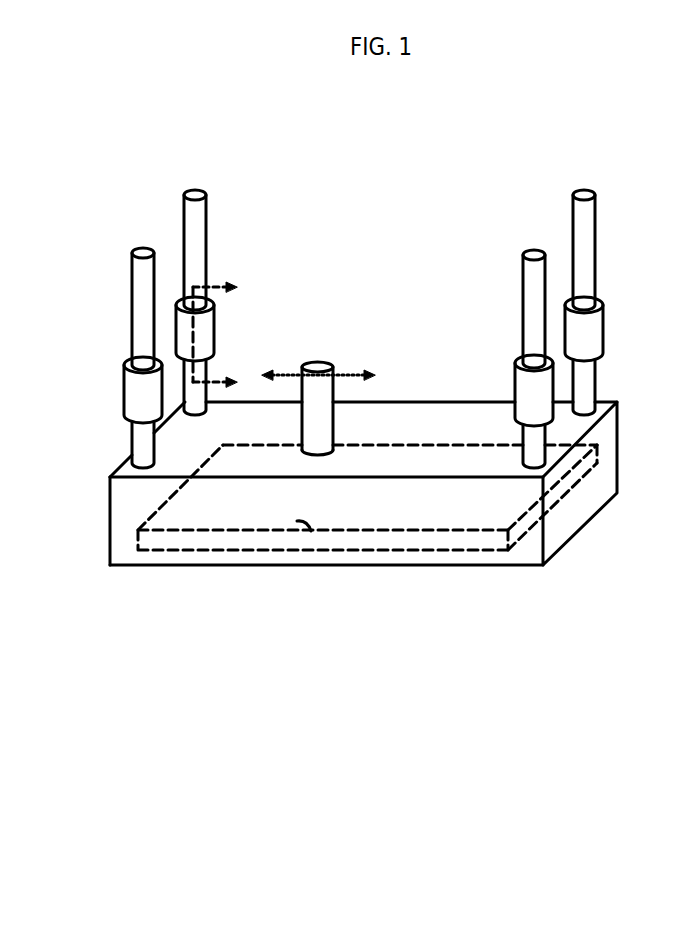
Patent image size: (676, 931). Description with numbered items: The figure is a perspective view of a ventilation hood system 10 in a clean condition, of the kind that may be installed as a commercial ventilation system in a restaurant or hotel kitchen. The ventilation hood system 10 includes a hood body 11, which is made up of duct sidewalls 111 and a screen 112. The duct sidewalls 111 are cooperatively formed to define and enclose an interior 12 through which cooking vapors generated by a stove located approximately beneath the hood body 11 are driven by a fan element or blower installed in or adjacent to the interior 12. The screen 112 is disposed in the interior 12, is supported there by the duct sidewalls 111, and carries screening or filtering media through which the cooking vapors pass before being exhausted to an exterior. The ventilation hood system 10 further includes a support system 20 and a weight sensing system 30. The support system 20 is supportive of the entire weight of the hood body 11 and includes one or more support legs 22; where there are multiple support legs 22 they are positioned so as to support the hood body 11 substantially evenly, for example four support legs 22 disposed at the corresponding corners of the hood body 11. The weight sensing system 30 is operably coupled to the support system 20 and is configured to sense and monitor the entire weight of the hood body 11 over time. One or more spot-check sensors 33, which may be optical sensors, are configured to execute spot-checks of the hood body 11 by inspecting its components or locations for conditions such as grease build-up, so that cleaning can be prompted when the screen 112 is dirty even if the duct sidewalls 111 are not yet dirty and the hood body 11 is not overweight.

The ventilation hood system 10 is at (168, 582).
The hood body 11 is at (432, 565).
The duct sidewalls 111 is at (110, 515).
The screen 112 is at (297, 521).
The interior 12 is at (367, 530).
The support system 20 is at (185, 233).
The support legs 22 is at (154, 277).
The weight sensing system 30 is at (122, 365).
The spot-check sensors 33 is at (317, 362).